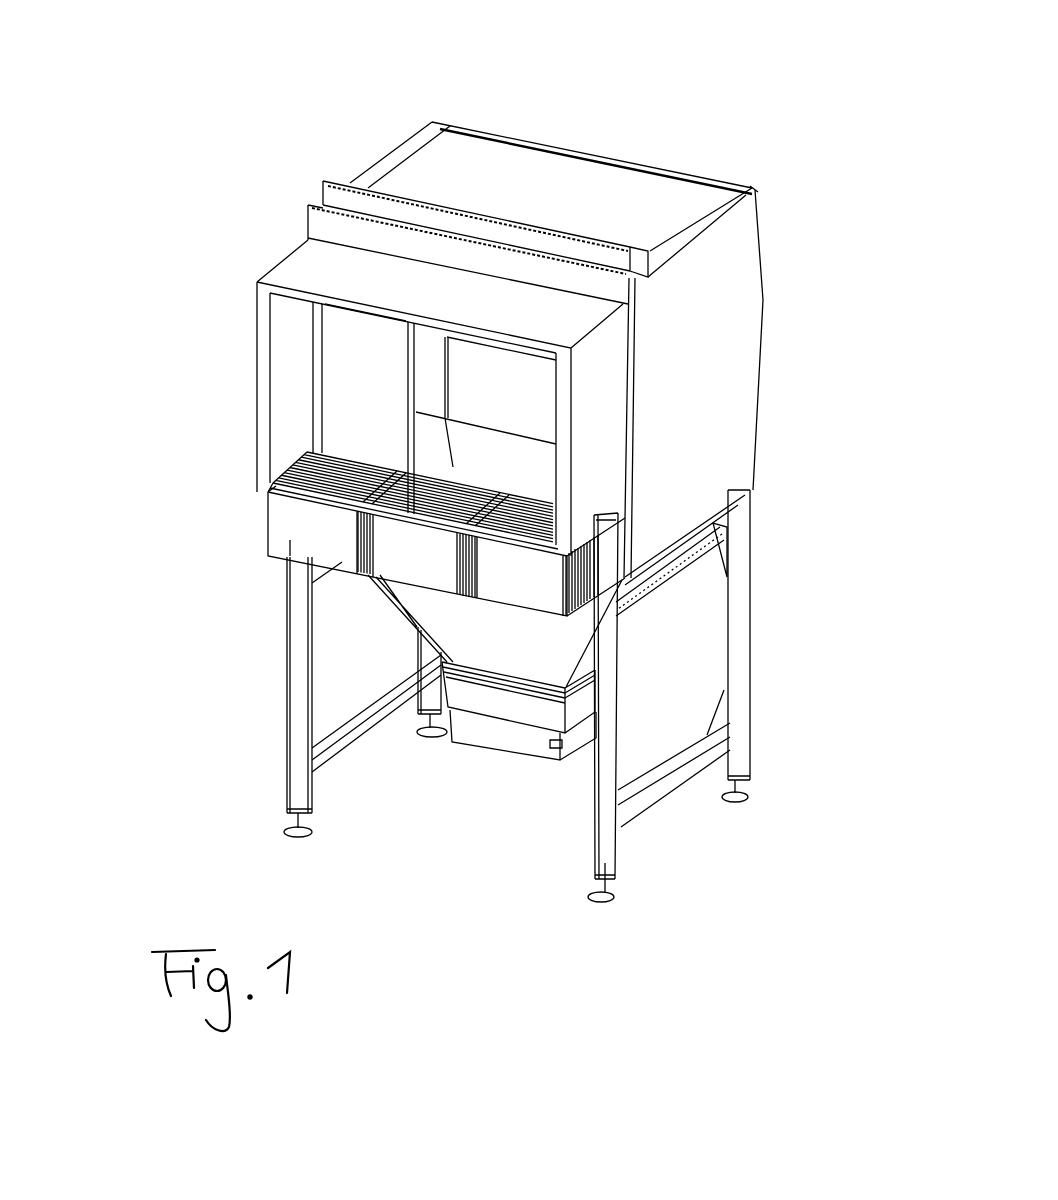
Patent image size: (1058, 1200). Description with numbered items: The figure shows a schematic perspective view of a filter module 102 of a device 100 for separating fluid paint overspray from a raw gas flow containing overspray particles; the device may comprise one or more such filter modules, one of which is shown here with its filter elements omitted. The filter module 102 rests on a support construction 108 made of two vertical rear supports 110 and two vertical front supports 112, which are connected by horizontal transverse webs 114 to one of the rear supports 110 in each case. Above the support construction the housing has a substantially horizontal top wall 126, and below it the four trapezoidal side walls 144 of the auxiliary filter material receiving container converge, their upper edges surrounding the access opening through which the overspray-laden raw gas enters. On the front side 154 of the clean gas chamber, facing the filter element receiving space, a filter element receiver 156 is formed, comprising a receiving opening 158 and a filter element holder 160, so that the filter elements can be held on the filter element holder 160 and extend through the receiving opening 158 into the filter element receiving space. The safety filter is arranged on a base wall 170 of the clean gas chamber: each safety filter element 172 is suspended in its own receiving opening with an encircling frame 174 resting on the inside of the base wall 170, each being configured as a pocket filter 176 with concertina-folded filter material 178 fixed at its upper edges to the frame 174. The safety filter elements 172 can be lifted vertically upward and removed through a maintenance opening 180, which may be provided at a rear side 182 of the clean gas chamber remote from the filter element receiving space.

The device for separating fluid paint overspray 100 is at (384, 113).
The filter module 102 is at (340, 139).
The support construction 108 is at (265, 665).
The vertical rear supports 110 is at (292, 760).
The vertical front supports 112 is at (735, 605).
The horizontal transverse webs 114 is at (355, 728).
The top wall 126 is at (656, 199).
The trapezoidal side walls 144 is at (530, 657).
The front side 154 is at (318, 349).
The filter element receiver 156 is at (304, 400).
The receiving opening 158 is at (390, 398).
The filter element holder 160 is at (315, 458).
The base wall 170 is at (277, 462).
The safety filter element 172 is at (293, 510).
The frame 174 is at (293, 506).
The pocket filter 176 is at (290, 537).
The filter material 178 is at (165, 612).
The maintenance opening 180 is at (340, 317).
The rear side 182 is at (563, 425).